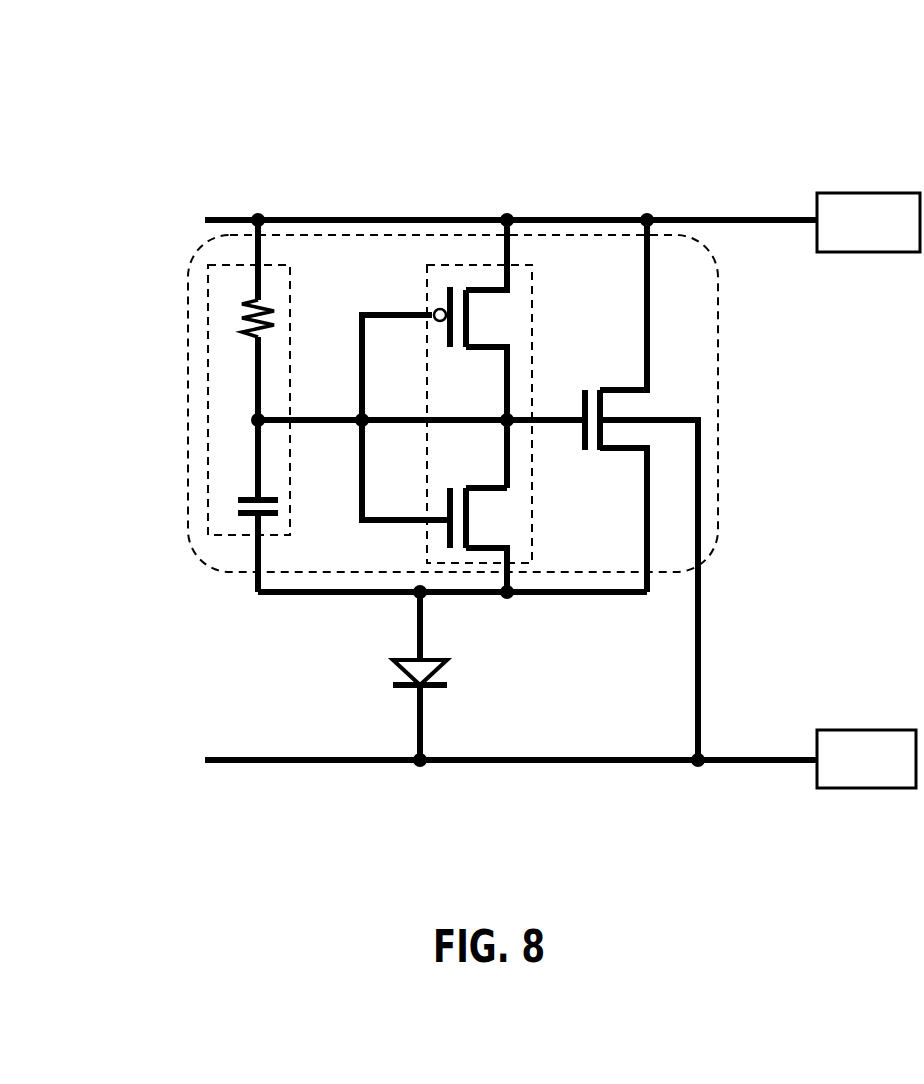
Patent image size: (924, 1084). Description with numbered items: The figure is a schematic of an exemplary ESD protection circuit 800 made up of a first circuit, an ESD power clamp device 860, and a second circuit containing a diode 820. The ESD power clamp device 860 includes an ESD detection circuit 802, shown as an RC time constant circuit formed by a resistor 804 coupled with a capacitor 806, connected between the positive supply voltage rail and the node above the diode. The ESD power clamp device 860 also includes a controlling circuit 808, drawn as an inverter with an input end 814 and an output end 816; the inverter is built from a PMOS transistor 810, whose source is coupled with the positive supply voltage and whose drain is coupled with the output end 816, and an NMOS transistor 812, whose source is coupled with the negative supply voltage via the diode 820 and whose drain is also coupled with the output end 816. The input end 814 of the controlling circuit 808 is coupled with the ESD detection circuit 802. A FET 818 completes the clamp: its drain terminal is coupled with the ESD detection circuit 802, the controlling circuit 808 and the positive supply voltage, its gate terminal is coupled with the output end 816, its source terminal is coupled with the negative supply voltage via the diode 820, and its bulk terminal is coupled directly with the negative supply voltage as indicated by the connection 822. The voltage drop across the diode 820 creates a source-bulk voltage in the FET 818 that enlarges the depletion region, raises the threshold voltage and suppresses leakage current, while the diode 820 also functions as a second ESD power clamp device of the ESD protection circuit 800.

The ESD protection circuit 800 is at (187, 98).
The ESD detection circuit 802 is at (187, 415).
The resistor 804 is at (237, 310).
The capacitor 806 is at (237, 505).
The controlling circuit 808 is at (408, 406).
The PMOS transistor 810 is at (480, 286).
The NMOS transistor 812 is at (442, 530).
The input end 814 is at (345, 412).
The output end 816 is at (570, 405).
The FET 818 is at (625, 388).
The diode 820 is at (397, 672).
The bulk terminal connection 822 is at (680, 405).
The ESD power clamp device 860 is at (722, 345).